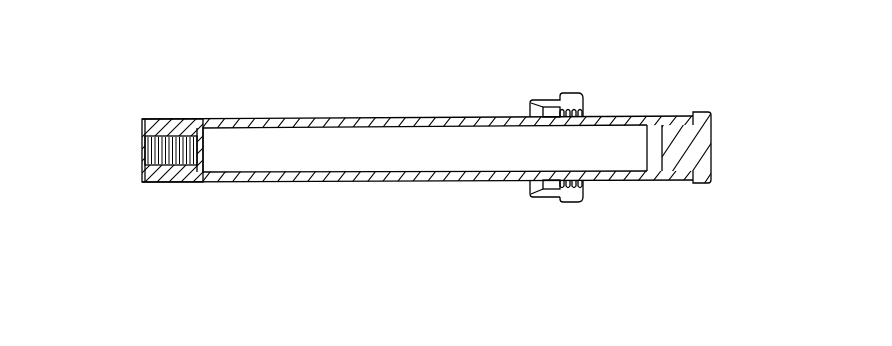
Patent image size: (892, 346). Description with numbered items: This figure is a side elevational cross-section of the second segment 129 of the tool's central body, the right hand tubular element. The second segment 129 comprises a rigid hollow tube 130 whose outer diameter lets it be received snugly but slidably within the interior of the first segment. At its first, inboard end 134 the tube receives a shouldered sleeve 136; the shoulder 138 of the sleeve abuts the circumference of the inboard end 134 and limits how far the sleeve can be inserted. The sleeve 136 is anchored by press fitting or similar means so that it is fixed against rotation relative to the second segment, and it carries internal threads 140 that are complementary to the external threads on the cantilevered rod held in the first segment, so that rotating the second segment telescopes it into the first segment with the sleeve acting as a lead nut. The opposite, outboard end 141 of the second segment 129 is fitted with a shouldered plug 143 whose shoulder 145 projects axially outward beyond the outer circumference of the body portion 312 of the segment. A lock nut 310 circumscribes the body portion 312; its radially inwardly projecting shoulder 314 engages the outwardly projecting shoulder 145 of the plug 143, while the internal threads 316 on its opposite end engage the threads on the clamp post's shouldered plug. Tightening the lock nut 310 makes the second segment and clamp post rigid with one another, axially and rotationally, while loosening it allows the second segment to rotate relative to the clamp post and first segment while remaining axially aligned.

The second segment 129 is at (437, 89).
The rigid hollow tube 130 is at (335, 118).
The first inboard end 134 is at (185, 120).
The shouldered sleeve 136 is at (138, 137).
The shoulder 138 is at (153, 120).
The internal threads 140 is at (138, 157).
The outboard end 141 is at (680, 115).
The shouldered plug 143 is at (705, 163).
The shoulder 145 is at (710, 115).
The lock nut 310 is at (550, 196).
The body portion 312 is at (495, 116).
The radially inwardly projecting shoulder 314 is at (530, 183).
The internal threads 316 is at (588, 176).